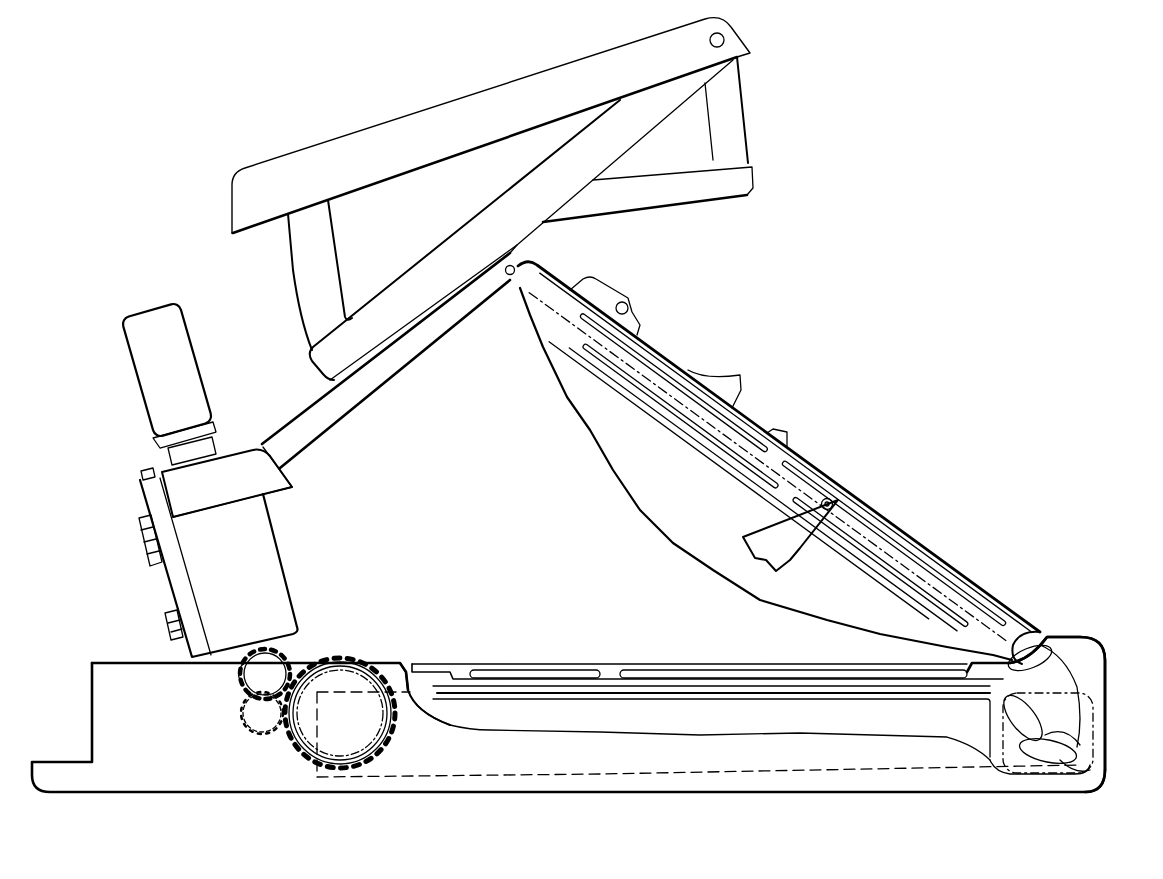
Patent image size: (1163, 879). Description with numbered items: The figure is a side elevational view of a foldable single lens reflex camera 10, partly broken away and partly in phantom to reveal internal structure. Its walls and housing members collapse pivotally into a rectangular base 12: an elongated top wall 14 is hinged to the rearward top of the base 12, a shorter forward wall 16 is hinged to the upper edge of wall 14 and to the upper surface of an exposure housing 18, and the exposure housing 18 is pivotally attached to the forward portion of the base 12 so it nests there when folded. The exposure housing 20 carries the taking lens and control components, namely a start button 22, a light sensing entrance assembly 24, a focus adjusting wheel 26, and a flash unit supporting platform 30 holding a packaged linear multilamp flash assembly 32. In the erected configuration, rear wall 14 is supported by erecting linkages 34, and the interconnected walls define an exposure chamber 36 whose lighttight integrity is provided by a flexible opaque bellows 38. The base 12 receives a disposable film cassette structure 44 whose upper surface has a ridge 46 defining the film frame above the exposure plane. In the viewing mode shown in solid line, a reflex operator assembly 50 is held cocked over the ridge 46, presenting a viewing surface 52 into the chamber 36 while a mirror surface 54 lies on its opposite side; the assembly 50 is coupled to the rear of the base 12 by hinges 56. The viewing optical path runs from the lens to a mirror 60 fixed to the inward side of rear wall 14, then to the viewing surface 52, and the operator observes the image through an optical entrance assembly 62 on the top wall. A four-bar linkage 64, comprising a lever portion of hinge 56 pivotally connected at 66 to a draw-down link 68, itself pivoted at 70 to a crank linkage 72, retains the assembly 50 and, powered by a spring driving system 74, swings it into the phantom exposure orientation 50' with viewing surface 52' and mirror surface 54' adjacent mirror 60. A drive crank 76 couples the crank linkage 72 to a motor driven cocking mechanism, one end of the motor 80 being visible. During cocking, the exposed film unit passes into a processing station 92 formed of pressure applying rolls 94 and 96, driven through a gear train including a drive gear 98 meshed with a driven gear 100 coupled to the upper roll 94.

The single lens reflex camera 10 is at (873, 434).
The base 12 is at (589, 707).
The top wall 14 is at (795, 439).
The forward wall 16 is at (516, 268).
The exposure housing 18 is at (306, 412).
The exposure housing 20 is at (191, 463).
The start button 22 is at (162, 634).
The light sensing entrance assembly 24 is at (138, 543).
The focus adjusting wheel 26 is at (146, 471).
The flash unit supporting platform 30 is at (222, 452).
The packaged linear multilamp flash assembly 32 is at (153, 311).
The erecting linkages 34 is at (803, 541).
The exposure chamber 36 is at (519, 548).
The flexible opaque bellows 38 is at (746, 588).
The cassette structure 44 is at (866, 772).
The ridge 46 is at (441, 688).
The reflex operator assembly 50 is at (718, 657).
The viewing surface 52 is at (707, 658).
The mirror surface 54 is at (711, 704).
The exposure mode orientation of operator assembly 50' is at (771, 490).
The viewing surface in exposure mode orientation 52' is at (822, 429).
The mirror surface in exposure mode position 54' is at (777, 452).
The hinges 56 is at (1043, 656).
The mirror 60 is at (796, 480).
The optical entrance assembly 62 is at (447, 101).
The four-bar linkage 64 is at (1100, 692).
The pivotal connection 66 is at (1020, 640).
The draw-down link 68 is at (1066, 690).
The pivotal connection 70 is at (1082, 746).
The crank linkage 72 is at (1092, 773).
The spring driving system 74 is at (1033, 760).
The drive crank 76 is at (1010, 727).
The motor 80 is at (1090, 786).
The processing station 92 is at (275, 697).
The upper pressure applying roll 94 is at (240, 683).
The pressure applying roll 96 is at (256, 727).
The drive gear 98 is at (341, 661).
The driven gear 100 is at (272, 671).